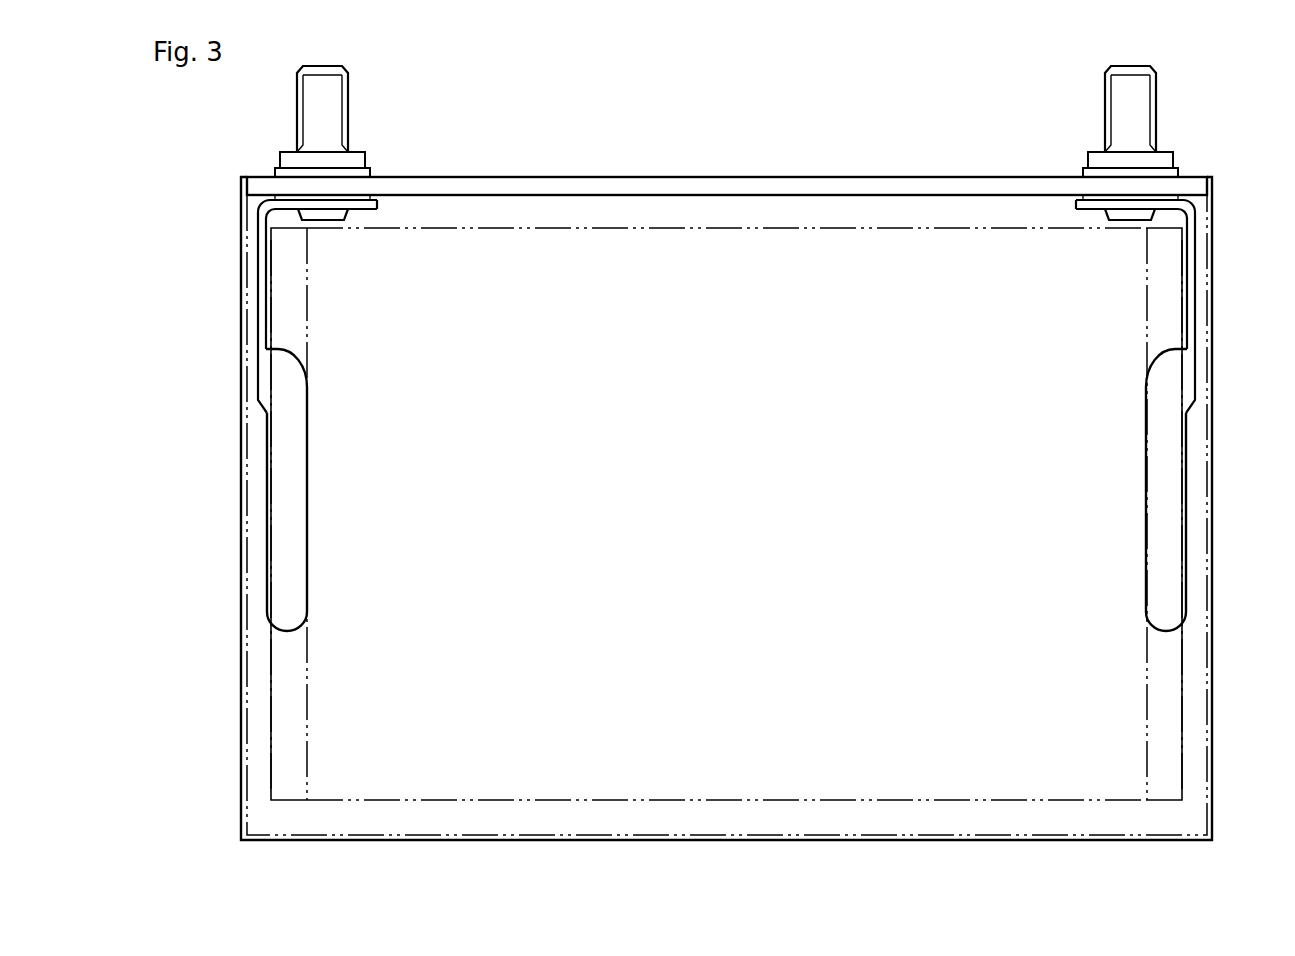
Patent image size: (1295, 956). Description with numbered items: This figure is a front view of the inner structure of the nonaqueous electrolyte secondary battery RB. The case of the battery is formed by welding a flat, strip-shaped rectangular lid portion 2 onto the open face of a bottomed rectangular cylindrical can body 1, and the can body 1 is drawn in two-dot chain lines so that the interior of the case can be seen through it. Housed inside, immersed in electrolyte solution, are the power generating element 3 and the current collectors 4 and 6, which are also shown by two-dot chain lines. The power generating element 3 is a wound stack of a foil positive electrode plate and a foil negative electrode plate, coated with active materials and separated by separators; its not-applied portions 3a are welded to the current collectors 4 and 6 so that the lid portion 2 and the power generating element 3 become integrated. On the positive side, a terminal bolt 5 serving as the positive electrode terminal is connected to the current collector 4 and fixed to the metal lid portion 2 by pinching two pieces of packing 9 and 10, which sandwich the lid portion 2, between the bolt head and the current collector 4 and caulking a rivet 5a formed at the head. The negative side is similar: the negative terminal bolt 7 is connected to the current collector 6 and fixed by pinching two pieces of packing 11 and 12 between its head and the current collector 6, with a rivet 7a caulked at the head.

The can body 1 is at (242, 533).
The lid portion 2 is at (823, 148).
The power generating element 3 is at (624, 801).
The not-applied portions 3a is at (271, 728).
The current collector 4 is at (267, 462).
The terminal bolt 5 is at (348, 84).
The rivet 5a is at (320, 221).
The current collector 6 is at (1186, 452).
The negative terminal bolt 7 is at (1103, 90).
The rivet 7a is at (1107, 219).
The packing 9 is at (372, 173).
The packing 10 is at (378, 200).
The packing 11 is at (1083, 173).
The packing 12 is at (1076, 200).
The nonaqueous electrolyte secondary battery RB is at (685, 142).